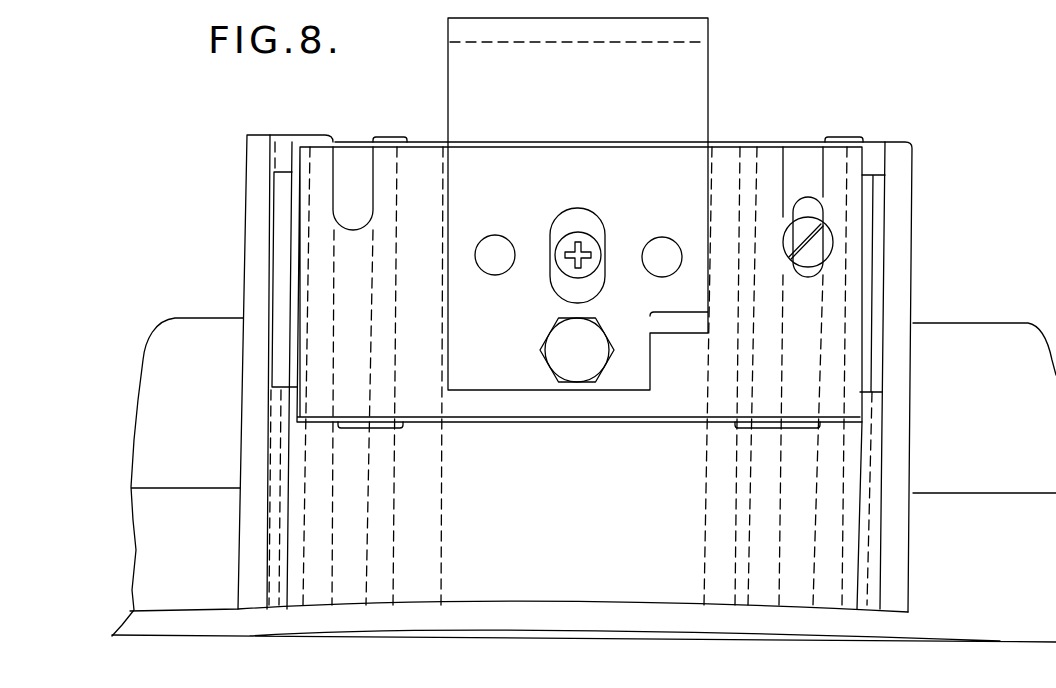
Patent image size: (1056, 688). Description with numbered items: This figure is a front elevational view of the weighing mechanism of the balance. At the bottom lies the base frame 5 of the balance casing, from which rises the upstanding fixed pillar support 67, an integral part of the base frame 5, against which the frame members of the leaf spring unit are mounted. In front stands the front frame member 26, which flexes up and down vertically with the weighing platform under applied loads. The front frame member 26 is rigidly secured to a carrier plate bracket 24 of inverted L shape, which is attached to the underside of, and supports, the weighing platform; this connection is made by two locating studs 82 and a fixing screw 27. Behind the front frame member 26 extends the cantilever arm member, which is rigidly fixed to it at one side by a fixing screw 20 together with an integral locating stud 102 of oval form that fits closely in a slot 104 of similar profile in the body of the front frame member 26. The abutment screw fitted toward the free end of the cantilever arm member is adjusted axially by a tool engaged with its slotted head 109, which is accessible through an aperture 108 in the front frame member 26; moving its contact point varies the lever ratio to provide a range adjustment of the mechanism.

The base frame 5 is at (620, 612).
The fixing screw 20 is at (827, 242).
The carrier plate bracket 24 is at (683, 106).
The front frame member 26 is at (832, 315).
The fixing screw 27 is at (557, 351).
The pillar support 67 is at (897, 156).
The locating studs 82 is at (490, 256).
The locating stud 102 is at (818, 212).
The slot 104 is at (806, 206).
The aperture 108 is at (566, 222).
The slotted head 109 is at (588, 245).